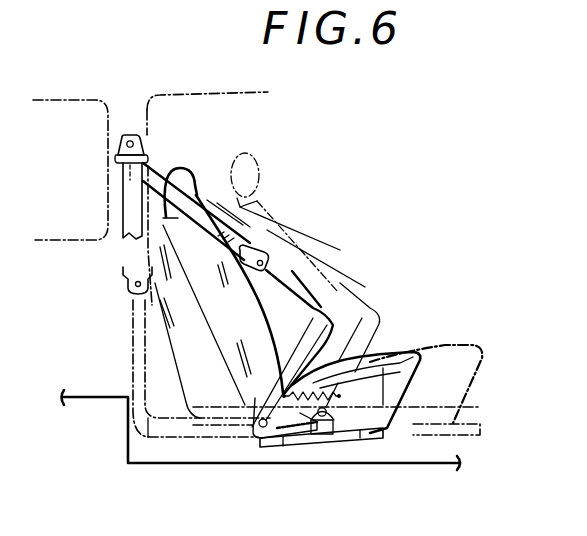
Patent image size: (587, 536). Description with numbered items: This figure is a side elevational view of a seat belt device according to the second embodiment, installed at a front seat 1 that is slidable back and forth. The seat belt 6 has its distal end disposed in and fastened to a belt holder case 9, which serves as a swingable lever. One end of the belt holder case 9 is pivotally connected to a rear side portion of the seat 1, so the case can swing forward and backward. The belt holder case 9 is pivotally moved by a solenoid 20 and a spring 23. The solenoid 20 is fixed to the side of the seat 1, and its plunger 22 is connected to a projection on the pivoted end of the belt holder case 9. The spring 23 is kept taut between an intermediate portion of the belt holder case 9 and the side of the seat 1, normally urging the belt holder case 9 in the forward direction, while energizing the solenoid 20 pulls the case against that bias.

The seat 1 is at (255, 322).
The seat belt 6 is at (238, 230).
The belt holder case 9 is at (357, 300).
The solenoid 20 is at (328, 434).
The plunger 22 is at (290, 440).
The spring 23 is at (420, 365).